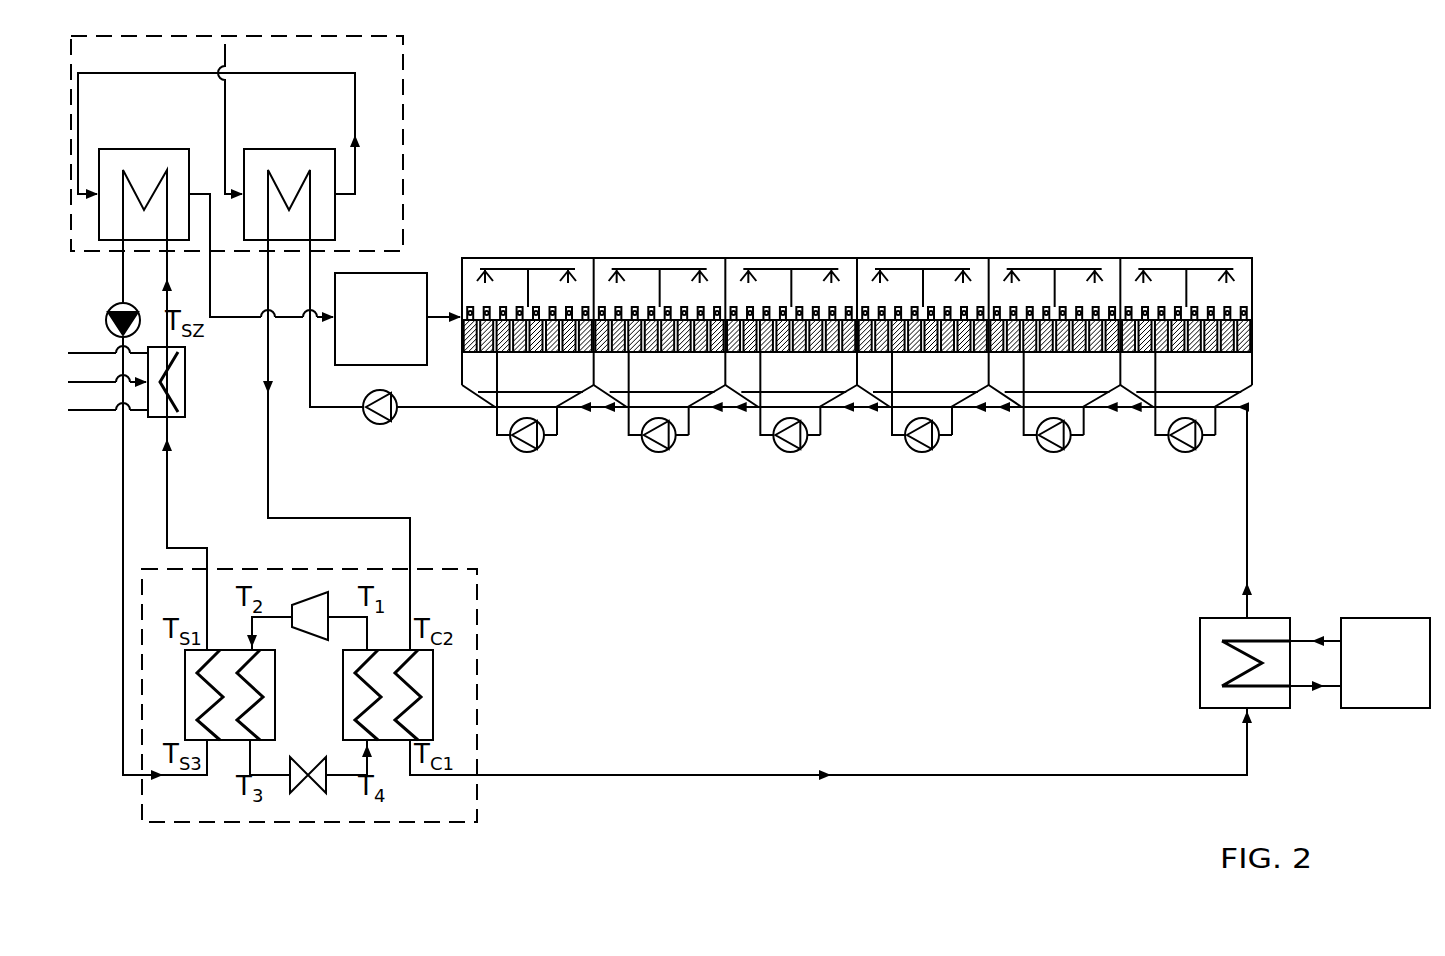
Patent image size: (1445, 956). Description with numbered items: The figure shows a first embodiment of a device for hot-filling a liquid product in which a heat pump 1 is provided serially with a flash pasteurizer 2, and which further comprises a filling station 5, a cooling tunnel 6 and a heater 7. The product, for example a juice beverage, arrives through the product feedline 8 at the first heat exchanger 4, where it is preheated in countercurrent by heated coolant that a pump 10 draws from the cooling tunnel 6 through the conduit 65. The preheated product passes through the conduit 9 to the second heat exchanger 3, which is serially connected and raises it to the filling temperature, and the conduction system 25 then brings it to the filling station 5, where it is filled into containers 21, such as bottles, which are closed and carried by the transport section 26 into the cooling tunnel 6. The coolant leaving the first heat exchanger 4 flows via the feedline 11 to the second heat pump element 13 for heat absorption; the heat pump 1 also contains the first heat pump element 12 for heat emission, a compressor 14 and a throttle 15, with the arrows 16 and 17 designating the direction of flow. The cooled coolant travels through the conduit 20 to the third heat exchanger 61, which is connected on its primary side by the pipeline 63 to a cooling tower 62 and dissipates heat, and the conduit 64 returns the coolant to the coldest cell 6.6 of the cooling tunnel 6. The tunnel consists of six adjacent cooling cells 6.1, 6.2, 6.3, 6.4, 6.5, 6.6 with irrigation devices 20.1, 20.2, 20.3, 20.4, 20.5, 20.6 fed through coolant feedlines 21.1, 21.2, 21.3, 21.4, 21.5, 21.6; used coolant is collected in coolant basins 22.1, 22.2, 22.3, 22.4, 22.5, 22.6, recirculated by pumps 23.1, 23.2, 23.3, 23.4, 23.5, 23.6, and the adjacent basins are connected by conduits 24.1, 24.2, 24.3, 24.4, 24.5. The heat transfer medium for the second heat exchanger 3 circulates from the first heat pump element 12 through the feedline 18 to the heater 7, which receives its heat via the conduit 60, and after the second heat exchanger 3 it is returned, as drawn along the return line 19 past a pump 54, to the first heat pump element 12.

The heat pump 1 is at (452, 569).
The flash pasteurizer 2 is at (403, 62).
The second heat exchanger 3 is at (148, 149).
The first heat exchanger 4 is at (294, 149).
The filling station 5 is at (418, 273).
The cooling tunnel 6 is at (492, 203).
The cooling cell 6.1 is at (528, 298).
The cooling cell 6.2 is at (660, 298).
The cooling cell 6.3 is at (791, 298).
The cooling cell 6.4 is at (923, 298).
The cooling cell 6.5 is at (1055, 298).
The cooling cell 6.6 is at (1186, 298).
The heater 7 is at (187, 393).
The product feedline 8 is at (226, 48).
The conduit 9 is at (358, 116).
The pump 10 is at (369, 422).
The feedline 11 is at (269, 463).
The first heat pump element 12 is at (185, 697).
The second heat pump element 13 is at (433, 697).
The compressor 14 is at (303, 597).
The throttle 15 is at (305, 792).
The direction of flow 16 is at (258, 645).
The direction of flow 17 is at (362, 752).
The feedline 18 is at (168, 463).
The line 19 is at (124, 522).
The conduit 20 is at (620, 775).
The irrigation device 20.1 is at (531, 246).
The irrigation device 20.2 is at (663, 246).
The irrigation device 20.3 is at (794, 246).
The irrigation device 20.4 is at (926, 246).
The irrigation device 20.5 is at (1058, 246).
The irrigation device 20.6 is at (1189, 246).
The containers 21 is at (471, 295).
The coolant feedline 21.1 is at (528, 383).
The coolant feedline 21.2 is at (660, 383).
The coolant feedline 21.3 is at (791, 383).
The coolant feedline 21.4 is at (923, 383).
The coolant feedline 21.5 is at (1055, 383).
The coolant feedline 21.6 is at (1186, 383).
The coolant basin 22.1 is at (493, 419).
The coolant basin 22.2 is at (625, 419).
The coolant basin 22.3 is at (756, 419).
The coolant basin 22.4 is at (888, 419).
The coolant basin 22.5 is at (1020, 419).
The coolant basin 22.6 is at (1151, 419).
The pump 23.1 is at (546, 452).
The pump 23.2 is at (678, 452).
The pump 23.3 is at (809, 452).
The pump 23.4 is at (941, 452).
The pump 23.5 is at (1073, 452).
The pump 23.6 is at (1204, 452).
The conduit 24.1 is at (585, 431).
The conduit 24.2 is at (717, 431).
The conduit 24.3 is at (848, 431).
The conduit 24.4 is at (980, 431).
The conduit 24.5 is at (1112, 431).
The conduction system 25 is at (240, 317).
The transport section 26 is at (440, 317).
The pump 54 is at (132, 303).
The conduit 60 is at (82, 410).
The third heat exchanger 61 is at (1275, 618).
The cooling tower 62 is at (1405, 618).
The pipeline 63 is at (1307, 641).
The conduit 64 is at (1248, 543).
The conduit 65 is at (455, 407).